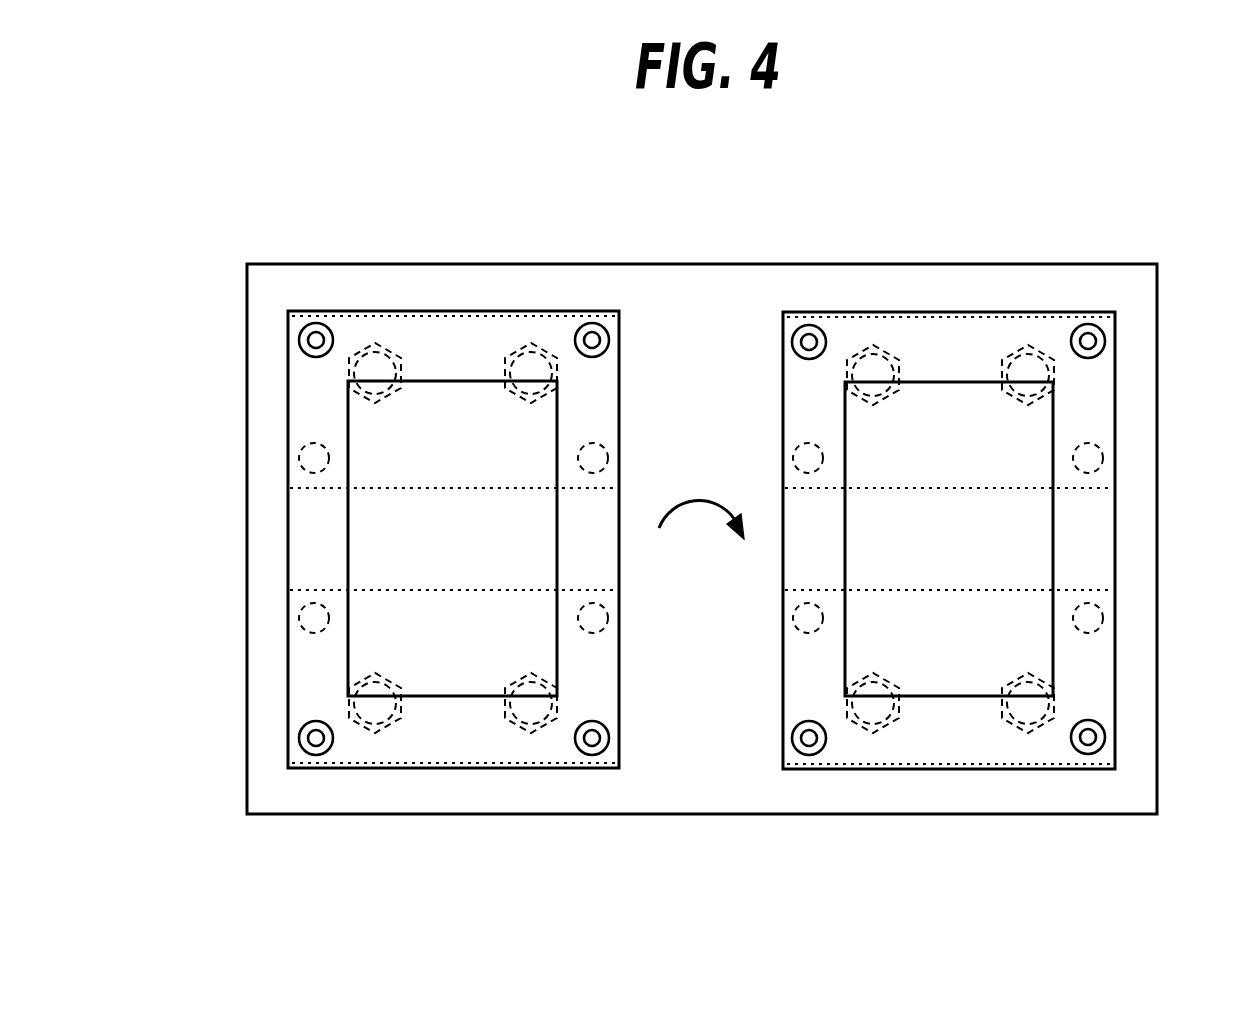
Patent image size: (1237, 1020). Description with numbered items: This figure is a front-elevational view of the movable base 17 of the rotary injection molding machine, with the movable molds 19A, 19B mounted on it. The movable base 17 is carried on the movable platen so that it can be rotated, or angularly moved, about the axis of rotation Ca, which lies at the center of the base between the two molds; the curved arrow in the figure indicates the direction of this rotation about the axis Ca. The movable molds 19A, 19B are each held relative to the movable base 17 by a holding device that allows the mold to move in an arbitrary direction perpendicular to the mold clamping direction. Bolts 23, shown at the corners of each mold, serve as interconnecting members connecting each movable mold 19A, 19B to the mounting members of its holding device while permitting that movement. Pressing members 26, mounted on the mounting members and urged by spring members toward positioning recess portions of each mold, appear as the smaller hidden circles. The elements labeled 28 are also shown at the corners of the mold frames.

The movable base 17 is at (700, 264).
The movable mold 19A is at (453, 311).
The movable mold 19B is at (956, 312).
The bolt 23 is at (522, 345).
The pressing member 26 is at (300, 455).
The bolt 28 is at (318, 322).
The axis of rotation Ca is at (700, 540).